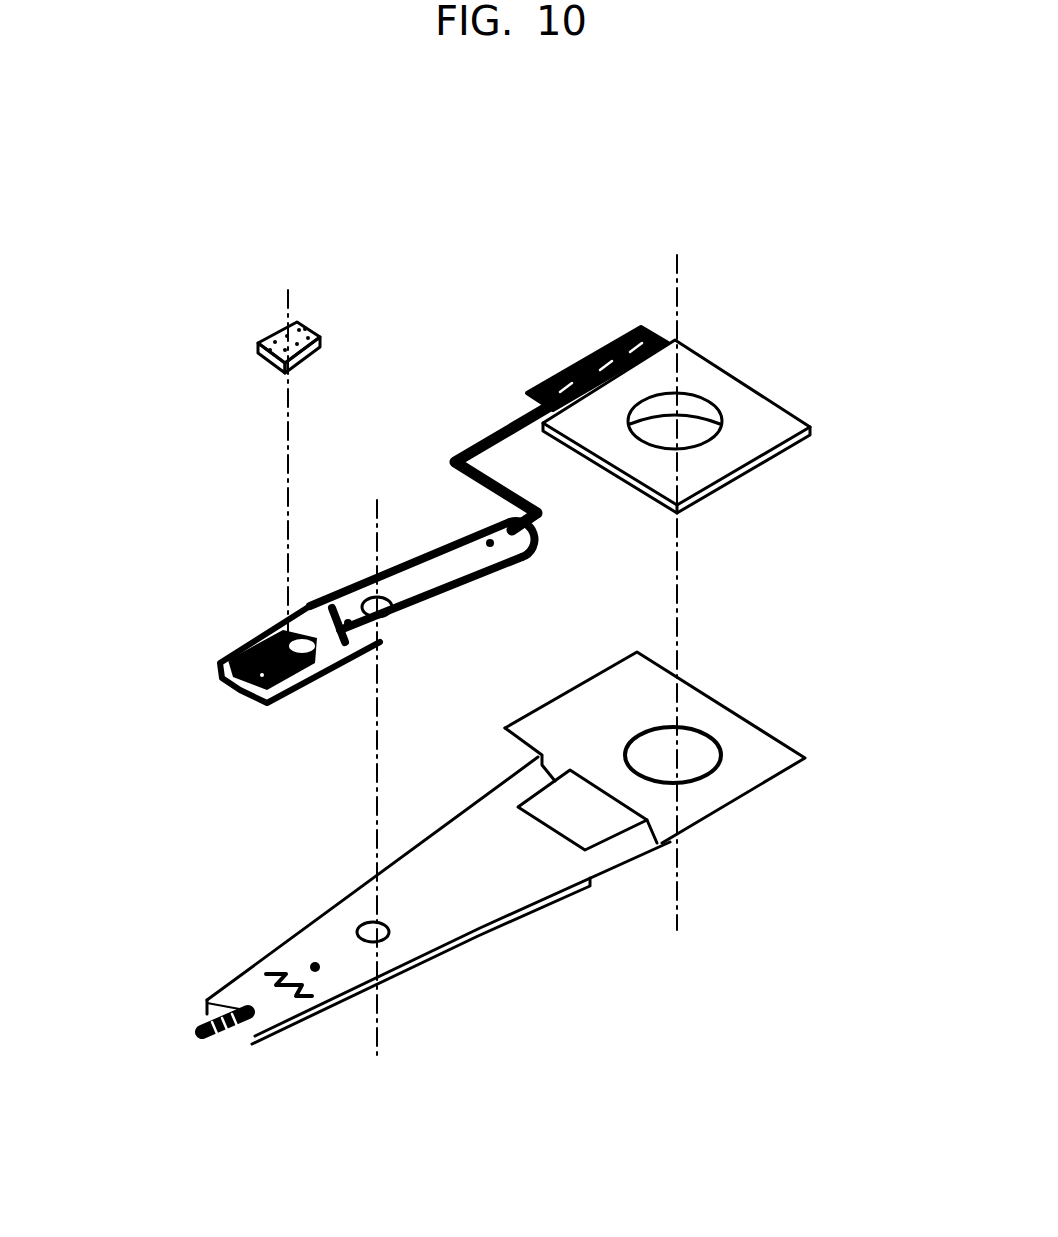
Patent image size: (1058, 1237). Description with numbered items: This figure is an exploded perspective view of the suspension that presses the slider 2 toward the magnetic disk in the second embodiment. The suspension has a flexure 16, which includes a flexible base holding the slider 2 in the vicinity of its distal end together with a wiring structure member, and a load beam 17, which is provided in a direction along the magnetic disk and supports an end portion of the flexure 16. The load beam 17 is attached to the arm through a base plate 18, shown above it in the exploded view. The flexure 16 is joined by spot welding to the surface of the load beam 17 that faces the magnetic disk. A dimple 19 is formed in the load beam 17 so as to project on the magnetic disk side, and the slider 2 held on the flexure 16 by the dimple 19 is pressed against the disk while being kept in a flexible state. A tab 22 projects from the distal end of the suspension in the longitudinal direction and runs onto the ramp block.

The slider 2 is at (263, 331).
The flexure 16 is at (444, 477).
The load beam 17 is at (551, 848).
The base plate 18 is at (751, 454).
The dimple 19 is at (283, 987).
The tab 22 is at (204, 1024).